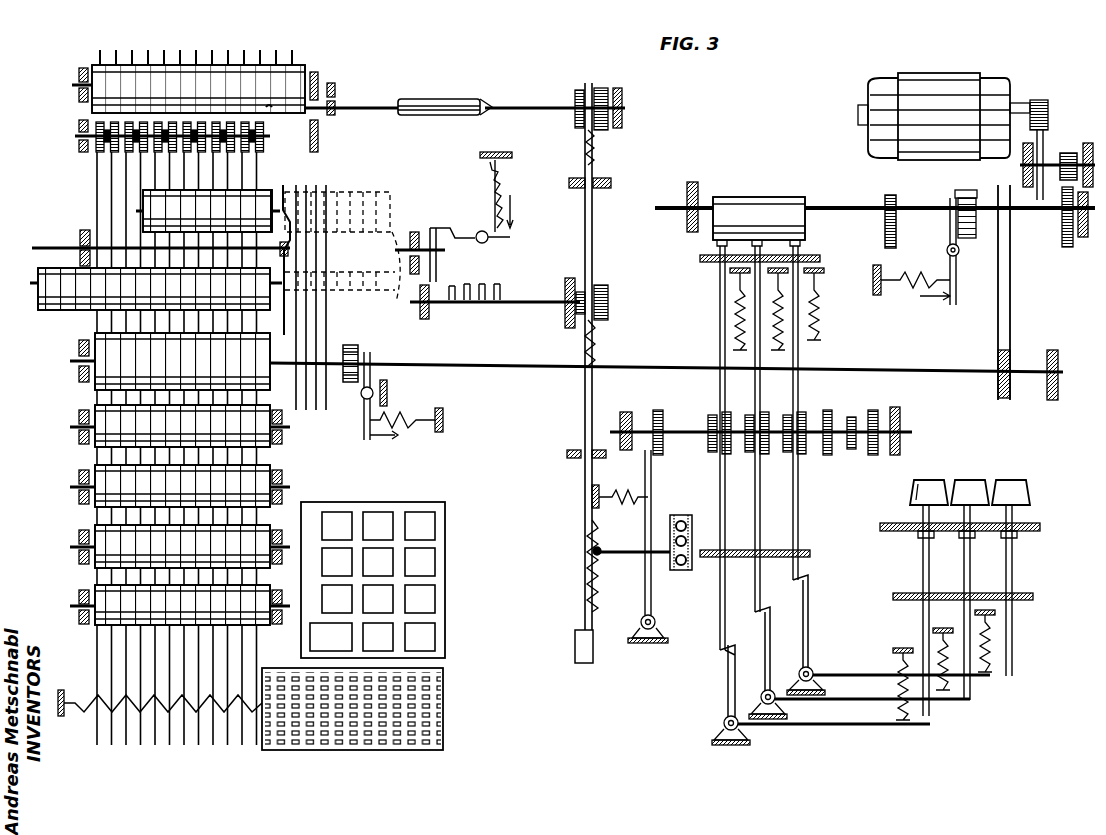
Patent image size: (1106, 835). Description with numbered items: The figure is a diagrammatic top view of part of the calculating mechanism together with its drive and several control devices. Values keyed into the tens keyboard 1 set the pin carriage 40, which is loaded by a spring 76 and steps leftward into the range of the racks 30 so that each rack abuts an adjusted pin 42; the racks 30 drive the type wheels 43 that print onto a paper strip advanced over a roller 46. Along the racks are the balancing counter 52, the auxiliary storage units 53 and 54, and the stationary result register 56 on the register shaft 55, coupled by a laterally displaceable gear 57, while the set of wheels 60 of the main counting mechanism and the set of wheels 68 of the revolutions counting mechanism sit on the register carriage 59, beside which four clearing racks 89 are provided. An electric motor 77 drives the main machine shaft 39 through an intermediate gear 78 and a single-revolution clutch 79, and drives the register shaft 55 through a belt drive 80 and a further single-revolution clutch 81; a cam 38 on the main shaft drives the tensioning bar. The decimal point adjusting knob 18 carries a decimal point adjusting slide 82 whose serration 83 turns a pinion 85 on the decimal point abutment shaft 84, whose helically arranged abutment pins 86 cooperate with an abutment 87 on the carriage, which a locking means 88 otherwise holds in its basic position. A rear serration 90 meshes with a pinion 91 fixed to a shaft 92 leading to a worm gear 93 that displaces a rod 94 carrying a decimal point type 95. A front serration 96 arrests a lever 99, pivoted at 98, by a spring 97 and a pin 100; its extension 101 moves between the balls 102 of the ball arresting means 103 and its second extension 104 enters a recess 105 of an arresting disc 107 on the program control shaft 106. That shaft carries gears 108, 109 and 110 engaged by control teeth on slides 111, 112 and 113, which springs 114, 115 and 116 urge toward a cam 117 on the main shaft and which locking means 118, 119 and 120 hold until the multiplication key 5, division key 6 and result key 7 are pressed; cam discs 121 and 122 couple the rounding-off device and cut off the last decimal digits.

The tens keyboard 1 is at (435, 525).
The multiplication key 5 is at (905, 497).
The division key 6 is at (1030, 498).
The result key 7 is at (986, 472).
The decimal point adjusting knob 18 is at (575, 658).
The racks 30 is at (180, 748).
The cam 38 is at (892, 195).
The main machine shaft 39 is at (840, 200).
The pin carriage 40 is at (443, 702).
The pin 42 is at (300, 746).
The type wheels 43 is at (120, 157).
The roller 46 is at (96, 62).
The balancing counter II 52 is at (93, 470).
The auxiliary storage unit 53 is at (93, 530).
The auxiliary storage unit 54 is at (93, 590).
The register shaft 55 is at (440, 368).
The stationary result register 56 is at (93, 340).
The laterally displaceable gear 57 is at (93, 410).
The register carriage 59 is at (398, 240).
The main counting mechanism wheels 60 is at (38, 297).
The revolutions counting mechanism wheels 68 is at (272, 196).
The spring 76 is at (80, 712).
The electric motor 77 is at (905, 78).
The intermediate gear 78 is at (1068, 153).
The single-revolution clutch 79 is at (968, 246).
The belt drive 80 is at (1012, 290).
The single-revolution clutch 81 is at (360, 348).
The decimal point adjusting slide 82 is at (584, 405).
The serration 83 is at (598, 345).
The decimal point abutment shaft 84 is at (520, 300).
The pinion 85 is at (605, 285).
The abutment pins 86 is at (455, 308).
The abutment 87 is at (440, 272).
The locking means 88 is at (480, 230).
The clearing racks 89 is at (340, 410).
The serration 90 is at (598, 150).
The pinion 91 is at (582, 90).
The shaft 92 is at (540, 112).
The worm gear 93 is at (440, 99).
The rod 94 is at (360, 104).
The decimal point type 95 is at (270, 105).
The serration 96 is at (600, 600).
The spring 97 is at (624, 492).
The pivot 98 is at (660, 625).
The lever 99 is at (634, 547).
The pin 100 is at (616, 565).
The extension 101 is at (670, 560).
The balls 102 is at (690, 562).
The ball arresting means 103 is at (698, 508).
The second extension 104 is at (651, 483).
The recess 105 is at (676, 448).
The program control shaft 106 is at (905, 428).
The arresting disc 107 is at (640, 420).
The gear 108 is at (700, 430).
The gear 109 is at (727, 412).
The gear 110 is at (764, 412).
The slide 111 is at (726, 500).
The slide 112 is at (762, 498).
The slide 113 is at (812, 492).
The spring 114 is at (712, 300).
The spring 115 is at (790, 295).
The spring 116 is at (815, 328).
The cam 117 is at (758, 183).
The locking means 118 is at (725, 700).
The locking means 119 is at (762, 655).
The locking means 120 is at (822, 610).
The cam disc 121 is at (827, 410).
The cam disc 122 is at (873, 410).